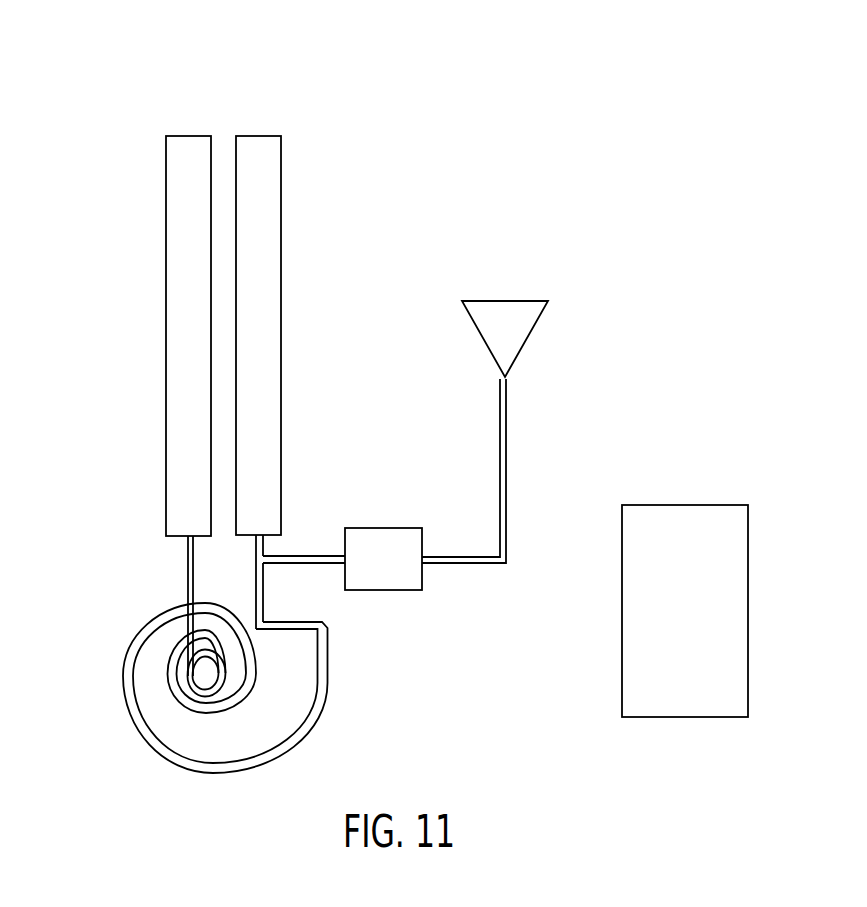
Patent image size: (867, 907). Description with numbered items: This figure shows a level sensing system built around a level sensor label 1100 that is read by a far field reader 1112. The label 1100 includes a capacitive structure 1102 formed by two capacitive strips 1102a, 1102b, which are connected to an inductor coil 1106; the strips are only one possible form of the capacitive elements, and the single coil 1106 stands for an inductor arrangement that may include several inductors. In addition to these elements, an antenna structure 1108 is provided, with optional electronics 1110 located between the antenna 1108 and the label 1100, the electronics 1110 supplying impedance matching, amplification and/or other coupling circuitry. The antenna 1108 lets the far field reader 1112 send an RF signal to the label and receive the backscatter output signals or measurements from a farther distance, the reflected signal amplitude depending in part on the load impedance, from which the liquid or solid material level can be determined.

The level sensor label 1100 is at (120, 173).
The capacitive structure 1102 is at (188, 80).
The capacitive strip 1102a is at (193, 153).
The capacitive strip 1102b is at (265, 153).
The inductor coil 1106 is at (157, 617).
The antenna structure 1108 is at (497, 300).
The optional electronics 1110 is at (390, 527).
The far field reader 1112 is at (657, 503).